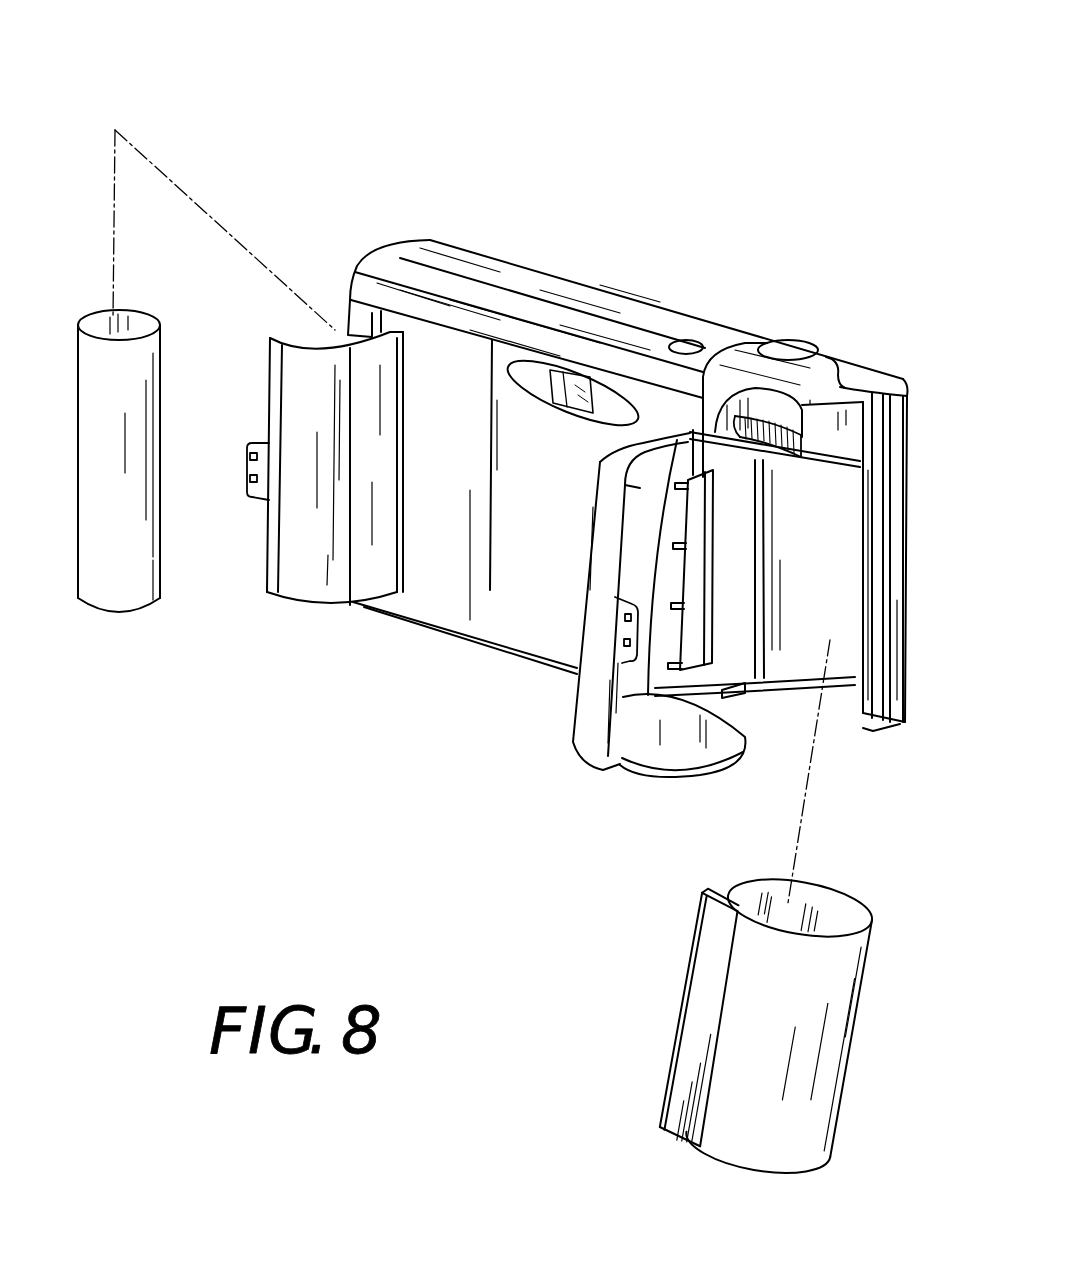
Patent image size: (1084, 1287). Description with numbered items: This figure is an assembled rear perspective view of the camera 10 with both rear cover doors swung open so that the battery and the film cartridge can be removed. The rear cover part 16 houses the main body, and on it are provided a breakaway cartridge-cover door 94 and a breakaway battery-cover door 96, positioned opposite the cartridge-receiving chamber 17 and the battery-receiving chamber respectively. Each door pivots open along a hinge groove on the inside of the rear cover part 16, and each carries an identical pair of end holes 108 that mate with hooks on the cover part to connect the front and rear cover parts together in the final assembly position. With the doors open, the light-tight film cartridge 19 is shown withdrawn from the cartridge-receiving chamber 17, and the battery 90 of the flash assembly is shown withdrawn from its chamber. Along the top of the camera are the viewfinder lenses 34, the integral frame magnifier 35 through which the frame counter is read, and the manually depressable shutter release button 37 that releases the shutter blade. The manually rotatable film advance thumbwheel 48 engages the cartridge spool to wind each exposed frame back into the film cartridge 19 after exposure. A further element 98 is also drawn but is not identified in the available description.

The camera 10 is at (404, 150).
The rear cover part 16 is at (503, 606).
The cartridge-receiving chamber 17 is at (838, 608).
The film cartridge 19 is at (847, 913).
The viewfinder lenses 34 is at (572, 404).
The frame magnifier 35 is at (688, 344).
The shutter release button 37 is at (788, 348).
The film advance thumbwheel 48 is at (781, 468).
The battery 90 is at (196, 405).
The cartridge-cover door 94 is at (637, 764).
The battery-cover door 96 is at (308, 580).
The film path 98 is at (318, 322).
The end holes 108 is at (245, 455).